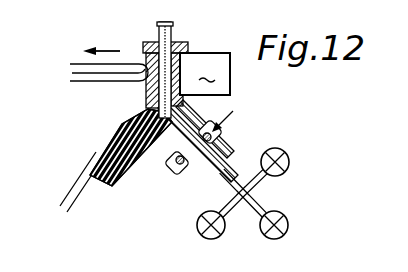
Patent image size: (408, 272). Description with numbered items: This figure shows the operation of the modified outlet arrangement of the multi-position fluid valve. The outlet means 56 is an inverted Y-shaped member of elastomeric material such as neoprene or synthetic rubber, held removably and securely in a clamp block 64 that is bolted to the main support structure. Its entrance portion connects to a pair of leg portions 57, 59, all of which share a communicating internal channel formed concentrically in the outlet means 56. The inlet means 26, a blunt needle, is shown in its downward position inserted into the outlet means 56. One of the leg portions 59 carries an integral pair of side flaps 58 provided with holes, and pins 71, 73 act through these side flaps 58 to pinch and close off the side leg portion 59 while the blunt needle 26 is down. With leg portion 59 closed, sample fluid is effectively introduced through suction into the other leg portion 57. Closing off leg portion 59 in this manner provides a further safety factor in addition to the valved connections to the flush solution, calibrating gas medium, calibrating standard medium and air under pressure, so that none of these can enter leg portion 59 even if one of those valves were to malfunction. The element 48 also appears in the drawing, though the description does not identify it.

The inlet means 26 is at (171, 32).
The tube 48 is at (104, 83).
The outlet means 56 is at (137, 172).
The leg portion 57 is at (96, 170).
The side flaps 58 is at (185, 178).
The leg portion 59 is at (187, 119).
The clamp block 64 is at (205, 74).
The pin 71 is at (222, 124).
The pin 73 is at (176, 176).